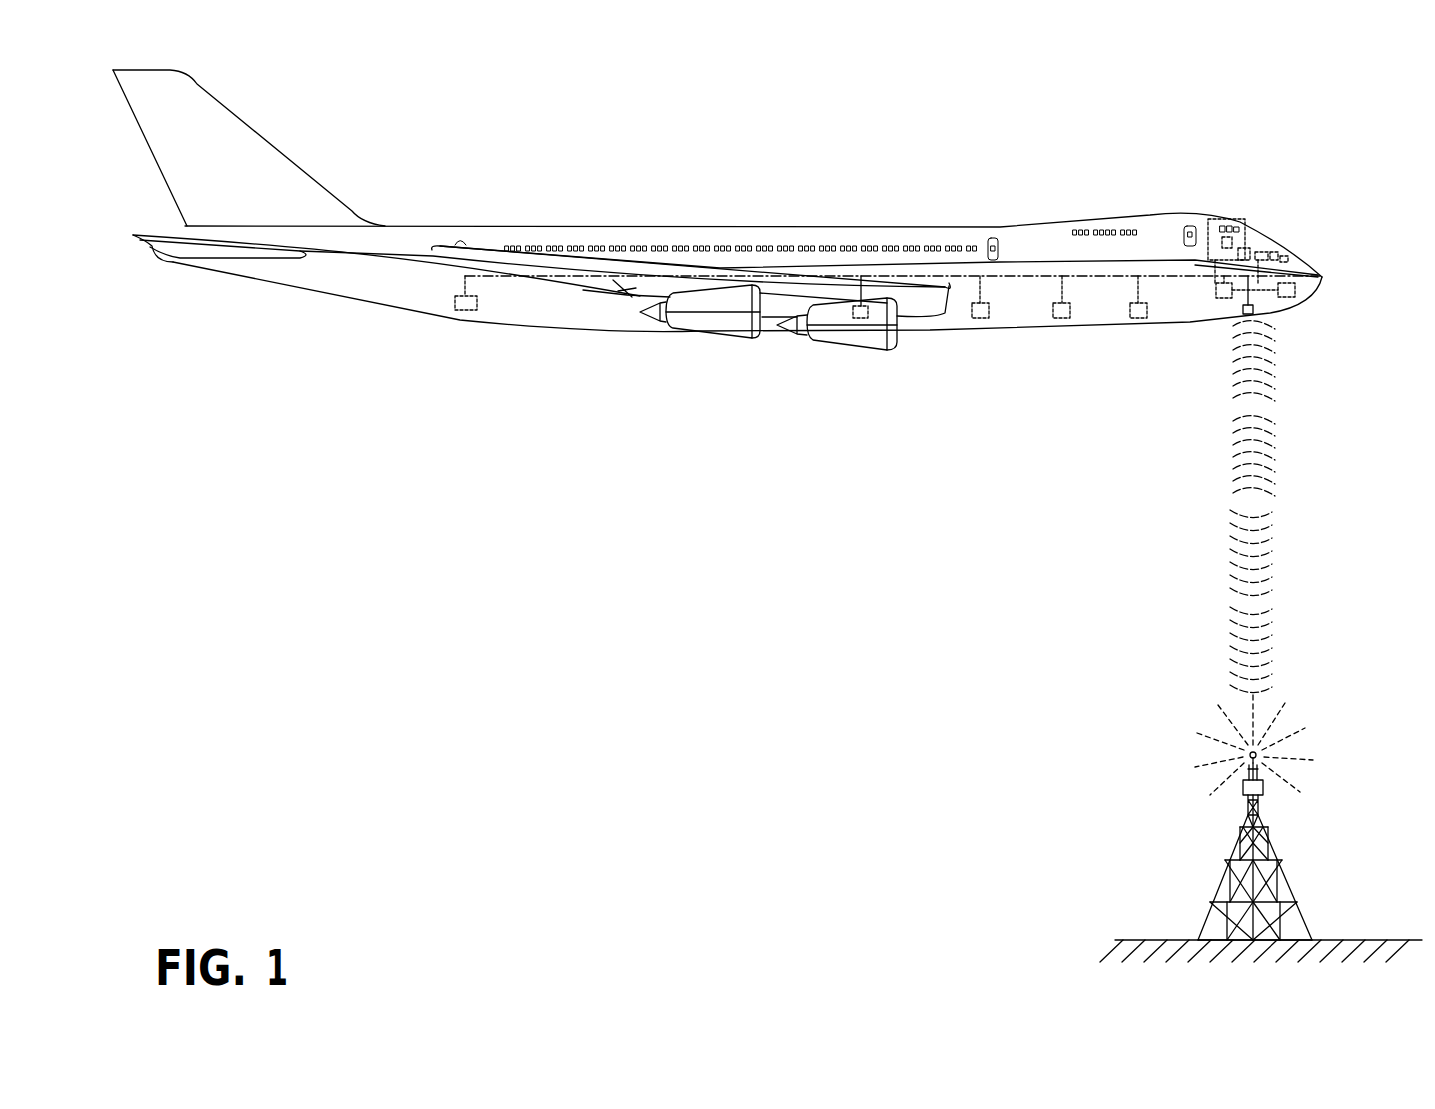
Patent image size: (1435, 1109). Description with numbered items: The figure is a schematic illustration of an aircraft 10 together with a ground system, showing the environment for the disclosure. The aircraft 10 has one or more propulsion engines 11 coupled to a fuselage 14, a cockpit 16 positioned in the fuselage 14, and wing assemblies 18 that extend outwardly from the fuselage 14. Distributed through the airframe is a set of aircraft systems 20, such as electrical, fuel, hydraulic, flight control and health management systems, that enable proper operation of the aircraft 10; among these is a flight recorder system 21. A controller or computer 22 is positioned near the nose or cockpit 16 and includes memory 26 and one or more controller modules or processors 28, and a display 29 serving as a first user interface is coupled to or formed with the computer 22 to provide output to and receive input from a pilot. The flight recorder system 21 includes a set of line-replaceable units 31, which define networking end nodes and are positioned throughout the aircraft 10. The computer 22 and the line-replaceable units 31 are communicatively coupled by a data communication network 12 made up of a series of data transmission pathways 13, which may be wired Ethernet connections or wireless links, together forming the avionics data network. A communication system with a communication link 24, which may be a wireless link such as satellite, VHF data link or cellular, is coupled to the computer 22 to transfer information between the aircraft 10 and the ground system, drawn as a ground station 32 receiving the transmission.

The aircraft 10 is at (1181, 213).
The propulsion engine 11 is at (726, 330).
The data communication network 12 is at (1088, 276).
The data transmission pathway 13 is at (1100, 283).
The fuselage 14 is at (1028, 224).
The cockpit 16 is at (1272, 246).
The wing assembly 18 is at (628, 298).
The aircraft systems 20 is at (467, 312).
The flight recorder system 21 is at (1214, 220).
The computer 22 is at (1289, 250).
The communication link 24 is at (1258, 318).
The memory 26 is at (1247, 236).
The processor 28 is at (1286, 242).
The display 29 is at (1270, 242).
The line-replaceable unit 31 is at (1212, 289).
The ground station 32 is at (1290, 842).